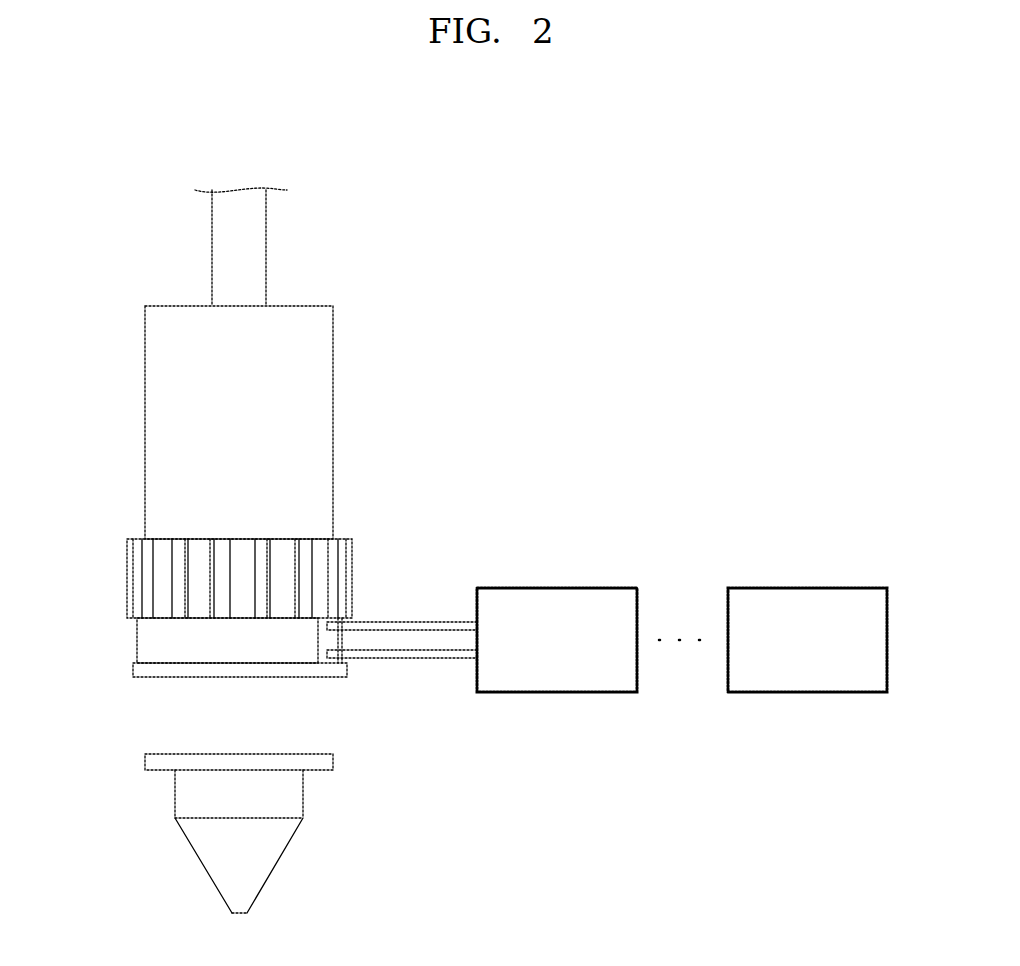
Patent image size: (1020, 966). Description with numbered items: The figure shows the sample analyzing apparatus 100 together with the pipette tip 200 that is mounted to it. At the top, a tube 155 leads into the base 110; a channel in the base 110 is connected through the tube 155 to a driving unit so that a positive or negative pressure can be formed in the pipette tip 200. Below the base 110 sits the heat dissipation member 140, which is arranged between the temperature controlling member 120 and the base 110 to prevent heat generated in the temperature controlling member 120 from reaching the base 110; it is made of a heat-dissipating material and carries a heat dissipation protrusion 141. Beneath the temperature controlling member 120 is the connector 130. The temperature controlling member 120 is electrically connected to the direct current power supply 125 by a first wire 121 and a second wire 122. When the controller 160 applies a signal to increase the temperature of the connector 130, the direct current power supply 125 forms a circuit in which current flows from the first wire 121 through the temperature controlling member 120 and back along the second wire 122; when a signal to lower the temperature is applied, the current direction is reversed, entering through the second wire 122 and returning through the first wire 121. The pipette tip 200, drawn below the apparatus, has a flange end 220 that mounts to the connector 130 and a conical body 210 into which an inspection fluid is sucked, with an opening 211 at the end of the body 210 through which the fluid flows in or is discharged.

The sample analyzing apparatus 100 is at (401, 324).
The tube 155 is at (262, 247).
The base 110 is at (320, 437).
The heat dissipation member 140 is at (124, 565).
The heat dissipation protrusion 141 is at (355, 548).
The temperature controlling member 120 is at (136, 638).
The first wire 121 is at (420, 620).
The second wire 122 is at (420, 659).
The connector 130 is at (134, 670).
The direct current power supply 125 is at (555, 693).
The controller 160 is at (812, 693).
The pipette tip 200 is at (368, 837).
The flange end 220 is at (320, 772).
The body 210 is at (275, 870).
The opening 211 is at (243, 914).